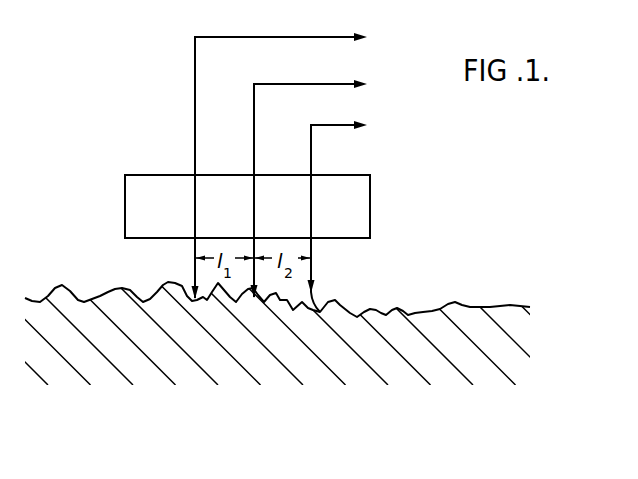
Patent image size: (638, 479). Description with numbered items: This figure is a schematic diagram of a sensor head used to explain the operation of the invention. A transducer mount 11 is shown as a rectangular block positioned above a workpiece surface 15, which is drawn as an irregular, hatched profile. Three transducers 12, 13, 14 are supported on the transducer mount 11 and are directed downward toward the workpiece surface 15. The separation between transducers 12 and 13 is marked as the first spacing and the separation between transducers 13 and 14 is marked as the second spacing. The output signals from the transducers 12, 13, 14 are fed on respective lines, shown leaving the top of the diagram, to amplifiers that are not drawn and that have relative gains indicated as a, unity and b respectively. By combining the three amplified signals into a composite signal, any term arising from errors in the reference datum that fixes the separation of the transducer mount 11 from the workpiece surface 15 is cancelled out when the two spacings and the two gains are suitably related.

The transducer mount 11 is at (138, 203).
The transducer 12 is at (195, 262).
The transducer 13 is at (253, 276).
The transducer 14 is at (313, 277).
The workpiece surface 15 is at (488, 342).